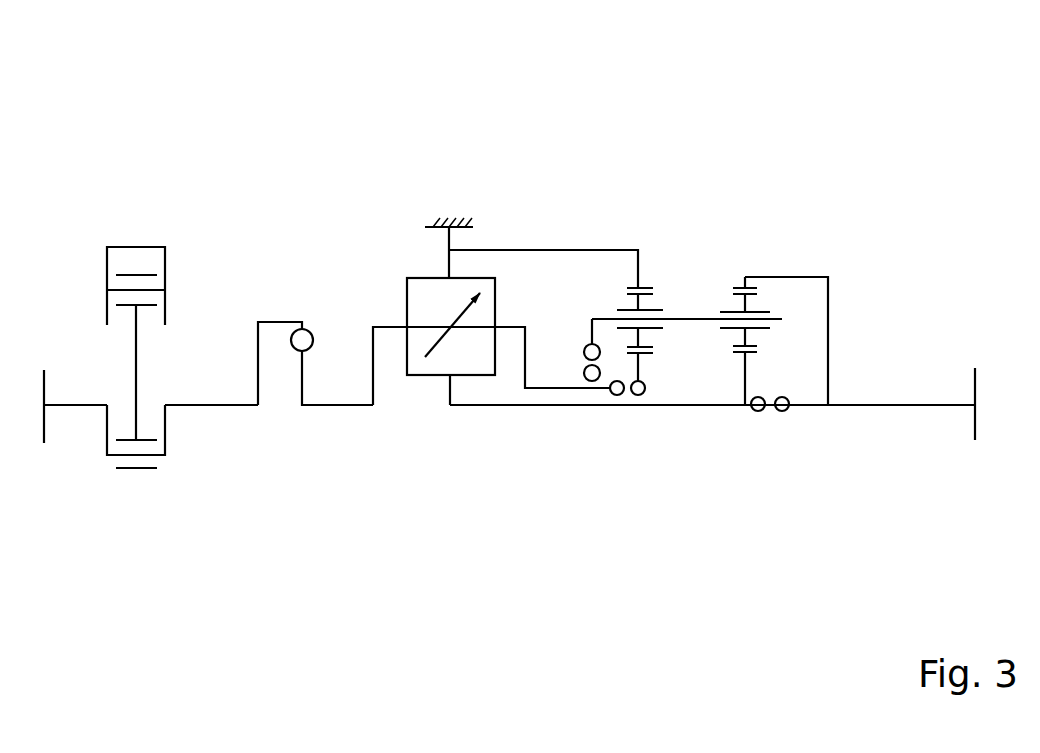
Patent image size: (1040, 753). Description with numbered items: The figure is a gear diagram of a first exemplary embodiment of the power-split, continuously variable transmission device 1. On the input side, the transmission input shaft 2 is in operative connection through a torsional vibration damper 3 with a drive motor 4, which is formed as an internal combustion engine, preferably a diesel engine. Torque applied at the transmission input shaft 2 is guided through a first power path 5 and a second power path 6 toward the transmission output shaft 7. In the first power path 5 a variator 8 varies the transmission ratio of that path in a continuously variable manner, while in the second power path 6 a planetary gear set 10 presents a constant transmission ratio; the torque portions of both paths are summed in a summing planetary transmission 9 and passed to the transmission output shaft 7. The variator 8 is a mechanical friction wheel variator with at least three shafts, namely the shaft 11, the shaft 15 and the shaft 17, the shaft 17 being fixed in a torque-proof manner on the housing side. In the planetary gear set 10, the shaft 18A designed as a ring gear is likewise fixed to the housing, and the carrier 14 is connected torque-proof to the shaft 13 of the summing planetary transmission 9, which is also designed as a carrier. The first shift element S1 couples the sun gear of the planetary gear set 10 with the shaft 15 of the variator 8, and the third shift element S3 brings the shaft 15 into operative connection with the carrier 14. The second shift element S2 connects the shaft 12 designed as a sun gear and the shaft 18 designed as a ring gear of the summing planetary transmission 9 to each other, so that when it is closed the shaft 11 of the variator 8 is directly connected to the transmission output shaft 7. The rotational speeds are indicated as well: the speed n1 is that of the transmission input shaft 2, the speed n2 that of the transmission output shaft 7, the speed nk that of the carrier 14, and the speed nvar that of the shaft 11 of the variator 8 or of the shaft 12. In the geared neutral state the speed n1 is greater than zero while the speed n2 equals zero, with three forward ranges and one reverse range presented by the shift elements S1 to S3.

The transmission device 1 is at (195, 185).
The transmission input shaft 2 is at (320, 405).
The torsional vibration damper 3 is at (306, 336).
The drive motor 4 is at (135, 247).
The first power path 5 is at (418, 427).
The second power path 6 is at (600, 207).
The transmission output shaft 7 is at (937, 407).
The variator 8 is at (430, 298).
The summing planetary transmission 9 is at (743, 185).
The planetary gear set 10 is at (638, 185).
The shaft of the variator 11 is at (450, 385).
The sun gear shaft 12 is at (745, 375).
The carrier shaft 13 is at (707, 319).
The carrier 14 is at (683, 319).
The shaft of the variator 15 is at (385, 323).
The shaft of the variator 17 is at (447, 263).
The ring gear shaft 18 is at (762, 283).
The ring gear shaft 18A is at (640, 268).
The rotational speed of the transmission input shaft n1 is at (355, 406).
The rotational speed of the variator shaft nvar is at (520, 406).
The rotational speed of the carrier shaft nk is at (683, 319).
The rotational speed of the transmission output shaft n2 is at (877, 407).
The first shift element S1 is at (617, 393).
The second shift element S2 is at (782, 411).
The third shift element S3 is at (593, 380).